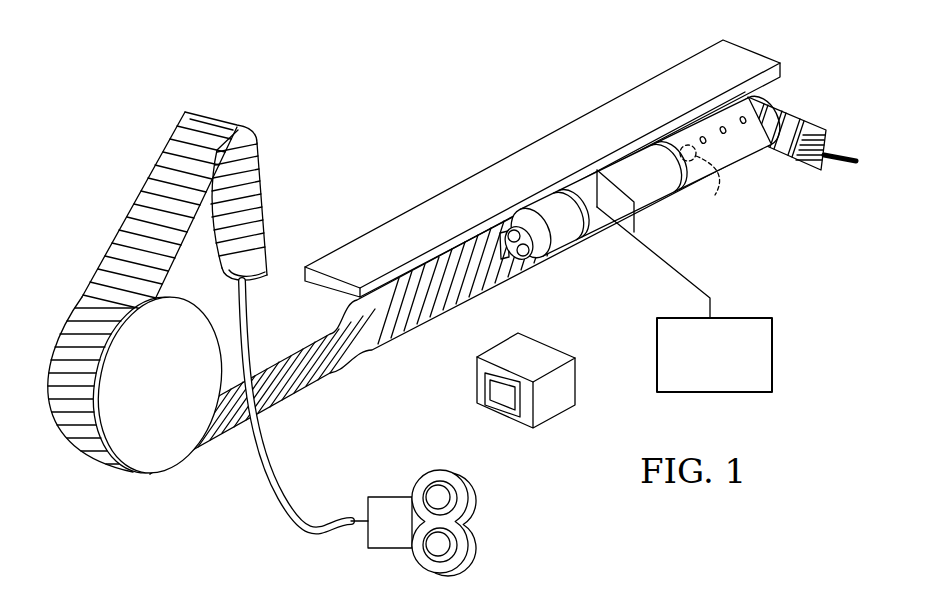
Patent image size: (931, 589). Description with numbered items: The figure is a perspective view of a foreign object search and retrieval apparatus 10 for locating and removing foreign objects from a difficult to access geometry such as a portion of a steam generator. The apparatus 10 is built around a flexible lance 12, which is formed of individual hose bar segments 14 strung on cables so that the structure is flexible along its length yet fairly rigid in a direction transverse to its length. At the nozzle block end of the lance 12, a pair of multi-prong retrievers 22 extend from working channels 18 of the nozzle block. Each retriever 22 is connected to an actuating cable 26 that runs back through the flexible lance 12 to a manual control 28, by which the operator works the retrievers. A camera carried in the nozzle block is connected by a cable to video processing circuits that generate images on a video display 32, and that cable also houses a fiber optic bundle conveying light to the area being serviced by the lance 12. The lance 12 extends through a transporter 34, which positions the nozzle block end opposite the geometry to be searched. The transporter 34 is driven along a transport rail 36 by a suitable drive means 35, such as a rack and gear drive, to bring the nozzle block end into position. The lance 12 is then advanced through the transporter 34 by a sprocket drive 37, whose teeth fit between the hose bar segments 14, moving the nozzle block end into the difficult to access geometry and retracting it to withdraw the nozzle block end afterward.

The foreign object search and retrieval apparatus 10 is at (542, 168).
The flexible lance 12 is at (472, 298).
The hose bar segments 14 is at (384, 543).
The working channels 18 is at (444, 529).
The multi-prong retrievers 22 is at (851, 168).
The actuating cable 26 is at (278, 499).
The manual control 28 is at (474, 530).
The video display 32 is at (537, 357).
The transporter 34 is at (702, 165).
The drive means 35 is at (742, 318).
The transport rail 36 is at (518, 177).
The sprocket drive 37 is at (717, 178).